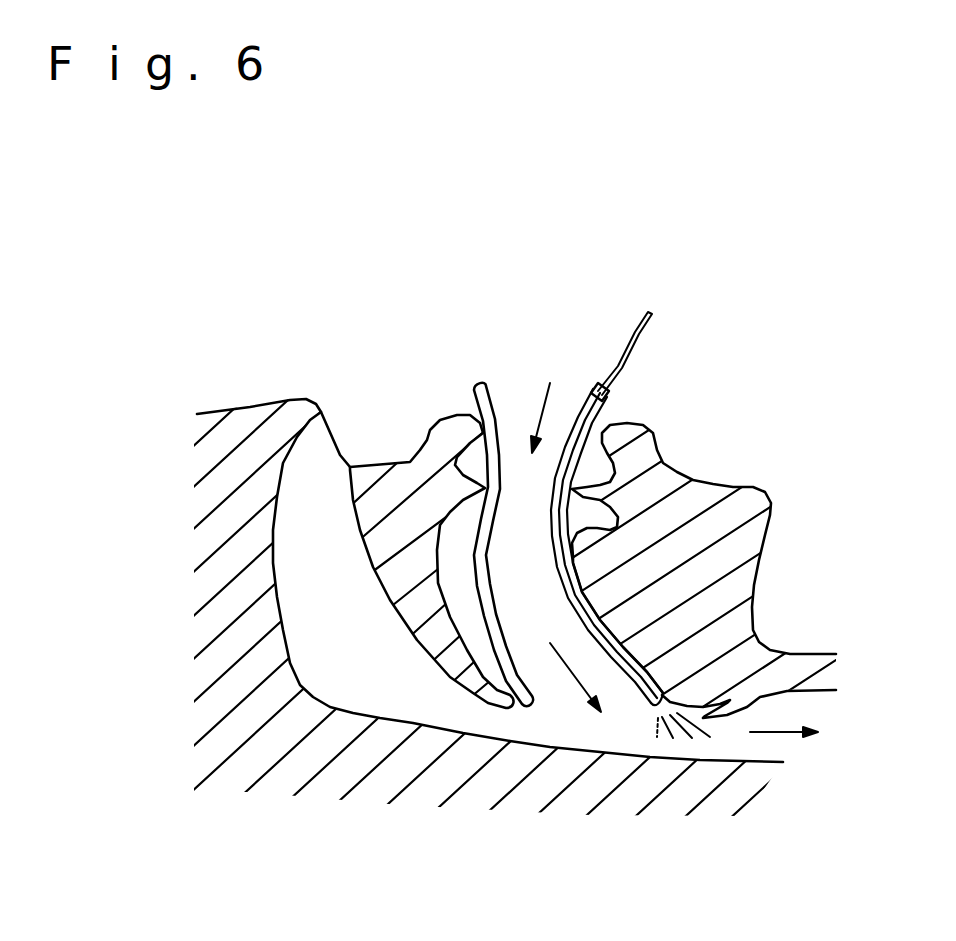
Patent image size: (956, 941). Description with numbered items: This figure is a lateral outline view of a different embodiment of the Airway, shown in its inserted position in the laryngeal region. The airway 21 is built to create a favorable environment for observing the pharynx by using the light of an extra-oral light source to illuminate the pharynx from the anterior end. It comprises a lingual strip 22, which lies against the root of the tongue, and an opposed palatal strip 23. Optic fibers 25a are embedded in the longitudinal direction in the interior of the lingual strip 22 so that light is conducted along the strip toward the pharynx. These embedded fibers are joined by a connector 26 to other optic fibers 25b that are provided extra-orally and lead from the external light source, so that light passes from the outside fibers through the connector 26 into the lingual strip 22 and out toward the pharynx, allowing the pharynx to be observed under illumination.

The airway 21 is at (591, 338).
The lingual strip 22 is at (575, 425).
The palatal strip 23 is at (473, 396).
The optic fibers 25a is at (665, 694).
The optic fibers 25b is at (636, 336).
The connector 26 is at (604, 401).